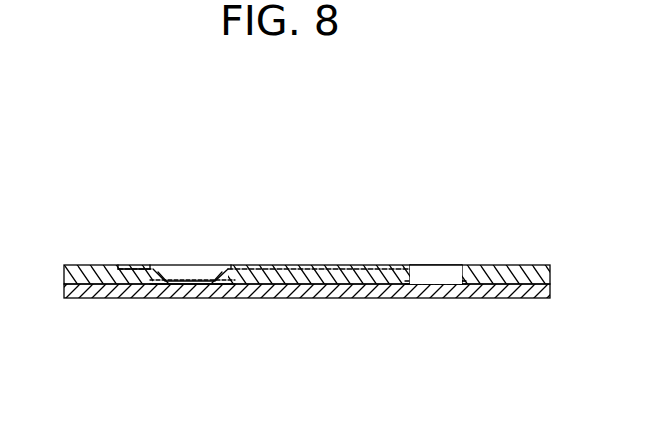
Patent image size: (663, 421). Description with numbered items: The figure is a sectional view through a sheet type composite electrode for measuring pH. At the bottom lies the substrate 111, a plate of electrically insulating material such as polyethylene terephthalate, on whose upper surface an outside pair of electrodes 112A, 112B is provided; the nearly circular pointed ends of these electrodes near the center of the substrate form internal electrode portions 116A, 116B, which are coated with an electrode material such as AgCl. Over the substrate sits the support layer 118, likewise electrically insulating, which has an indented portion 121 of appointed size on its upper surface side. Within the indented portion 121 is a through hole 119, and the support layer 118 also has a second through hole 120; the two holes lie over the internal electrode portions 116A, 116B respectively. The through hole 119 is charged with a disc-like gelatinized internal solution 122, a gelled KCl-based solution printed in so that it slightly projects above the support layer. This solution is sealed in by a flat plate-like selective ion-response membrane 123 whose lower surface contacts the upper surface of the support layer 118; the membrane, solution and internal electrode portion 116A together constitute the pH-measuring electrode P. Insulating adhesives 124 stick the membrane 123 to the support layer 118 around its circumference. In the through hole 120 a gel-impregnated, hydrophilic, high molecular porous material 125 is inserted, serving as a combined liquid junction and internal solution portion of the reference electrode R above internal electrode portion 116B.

The substrate 111 is at (307, 294).
The outside electrode 112A is at (188, 286).
The outside electrode 112B is at (450, 286).
The internal electrode portion 116A is at (144, 265).
The internal electrode portion 116B is at (412, 265).
The support layer 118 is at (328, 265).
The through hole 119 is at (223, 265).
The through hole 120 is at (464, 265).
The indented portion 121 is at (268, 265).
The gelatinized internal solution 122 is at (195, 265).
The selective ion-response membrane 123 is at (157, 265).
The adhesives 124 is at (118, 264).
The gel-impregnated hydrophilic high molecular porous material 125 is at (439, 265).
The pH-measuring electrode P is at (202, 223).
The reference electrode R is at (477, 208).